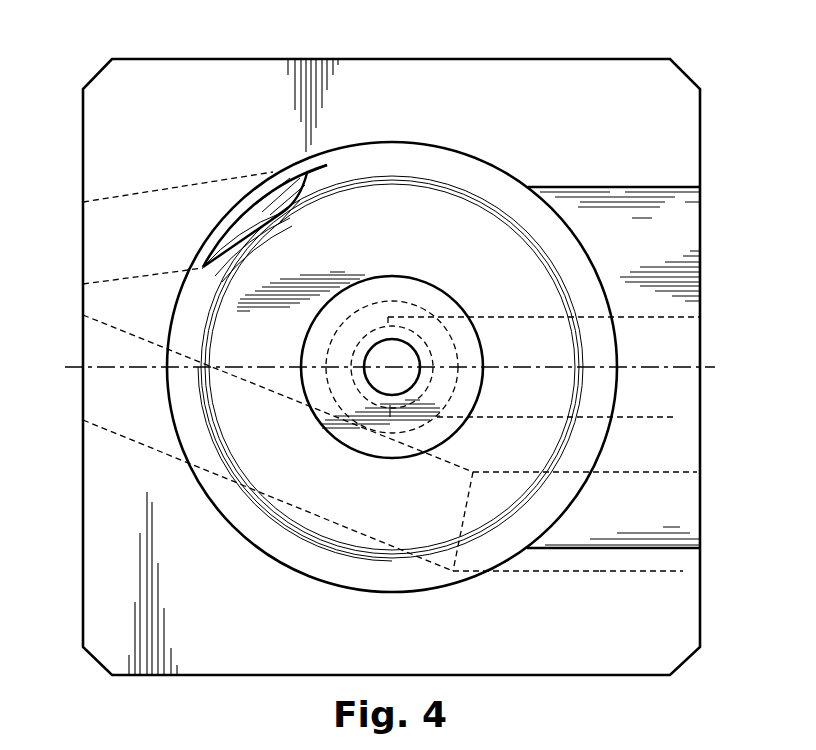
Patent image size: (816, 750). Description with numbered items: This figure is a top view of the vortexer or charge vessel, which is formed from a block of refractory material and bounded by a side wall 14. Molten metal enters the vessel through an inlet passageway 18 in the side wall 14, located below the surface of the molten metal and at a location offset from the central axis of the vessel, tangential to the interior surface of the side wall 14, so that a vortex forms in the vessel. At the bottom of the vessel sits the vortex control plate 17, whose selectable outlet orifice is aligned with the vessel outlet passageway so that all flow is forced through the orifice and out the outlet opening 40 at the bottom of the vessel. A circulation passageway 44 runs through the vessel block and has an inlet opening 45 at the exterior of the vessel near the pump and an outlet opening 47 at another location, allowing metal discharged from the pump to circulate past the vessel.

The side wall 14 is at (477, 238).
The vortex control plate 17 is at (413, 297).
The inlet passageway 18 is at (148, 192).
The inlet opening 45 is at (98, 424).
The outlet opening 40 is at (673, 417).
The outlet opening 47 is at (683, 572).
The circulation passageway 44 is at (532, 572).